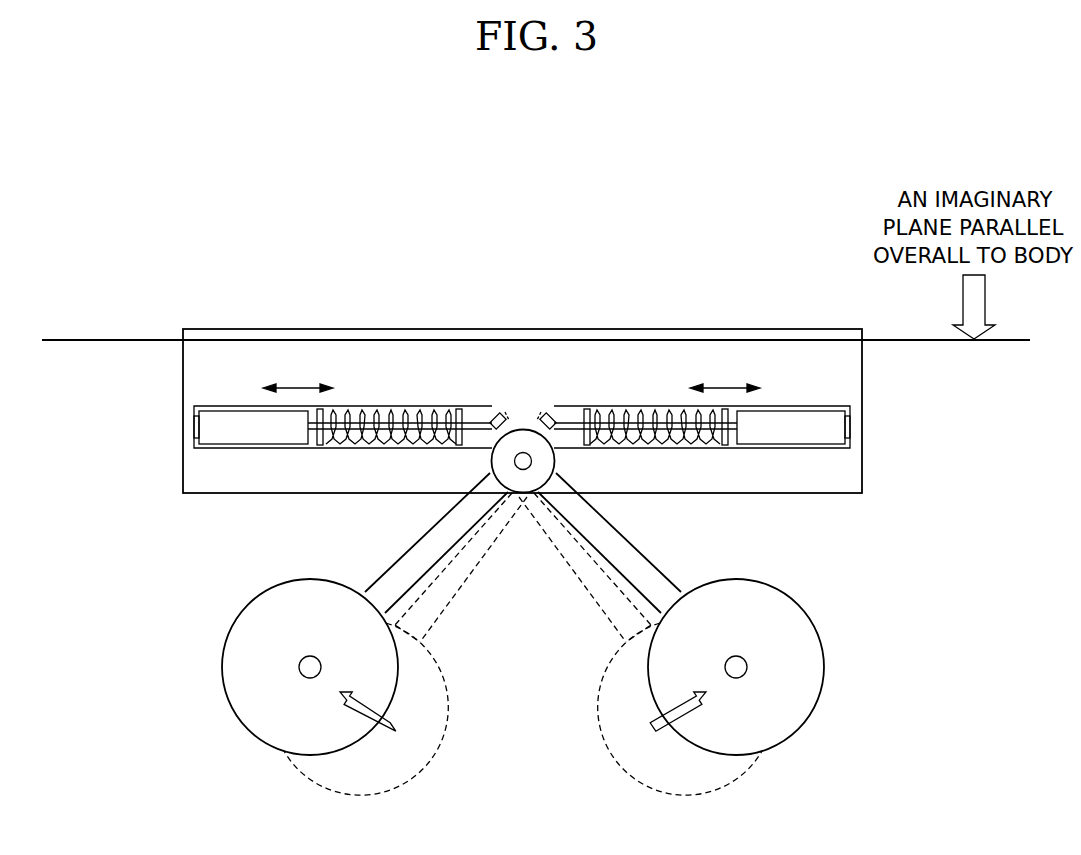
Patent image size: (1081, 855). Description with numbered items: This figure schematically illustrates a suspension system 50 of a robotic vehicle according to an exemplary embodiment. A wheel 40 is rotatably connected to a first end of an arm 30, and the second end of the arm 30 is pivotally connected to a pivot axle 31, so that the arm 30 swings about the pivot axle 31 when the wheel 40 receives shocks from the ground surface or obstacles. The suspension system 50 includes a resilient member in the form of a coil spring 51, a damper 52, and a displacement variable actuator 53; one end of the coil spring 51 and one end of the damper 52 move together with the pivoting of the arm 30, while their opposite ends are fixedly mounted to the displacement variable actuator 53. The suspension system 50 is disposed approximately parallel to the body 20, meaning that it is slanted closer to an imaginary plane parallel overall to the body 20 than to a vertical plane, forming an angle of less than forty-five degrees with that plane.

The body 20 is at (842, 378).
The arm 30 is at (416, 557).
The pivot axle 31 is at (522, 455).
The wheel 40 is at (237, 643).
The suspension system 50 is at (522, 339).
The coil spring 51 is at (360, 418).
The damper 52 is at (420, 418).
The displacement variable actuator 53 is at (253, 418).